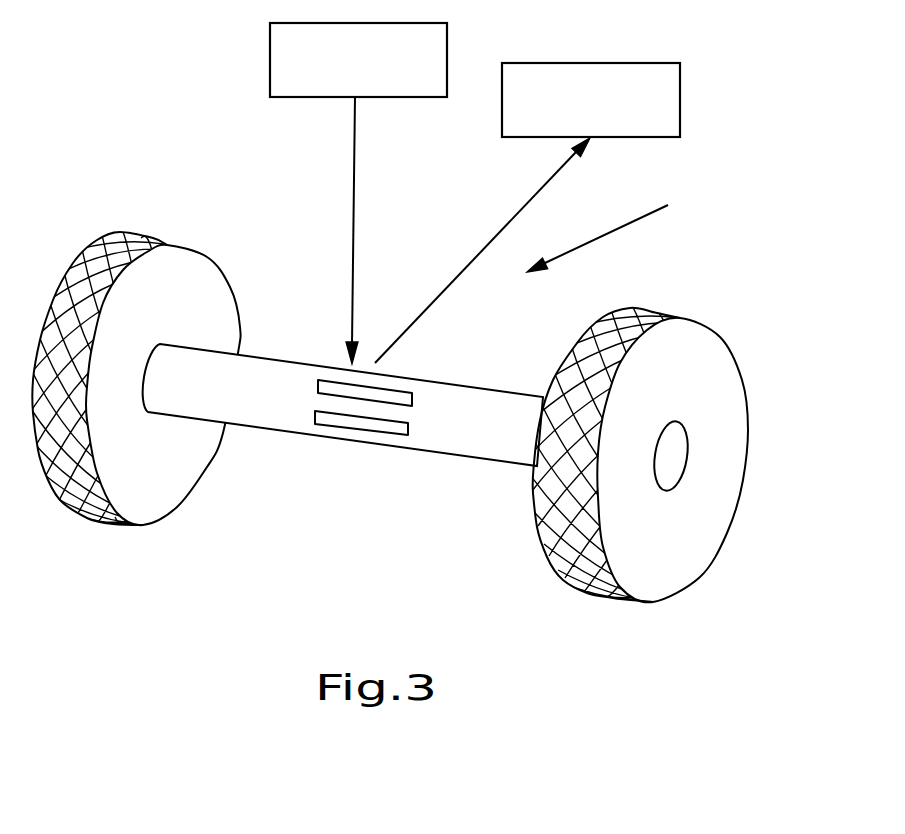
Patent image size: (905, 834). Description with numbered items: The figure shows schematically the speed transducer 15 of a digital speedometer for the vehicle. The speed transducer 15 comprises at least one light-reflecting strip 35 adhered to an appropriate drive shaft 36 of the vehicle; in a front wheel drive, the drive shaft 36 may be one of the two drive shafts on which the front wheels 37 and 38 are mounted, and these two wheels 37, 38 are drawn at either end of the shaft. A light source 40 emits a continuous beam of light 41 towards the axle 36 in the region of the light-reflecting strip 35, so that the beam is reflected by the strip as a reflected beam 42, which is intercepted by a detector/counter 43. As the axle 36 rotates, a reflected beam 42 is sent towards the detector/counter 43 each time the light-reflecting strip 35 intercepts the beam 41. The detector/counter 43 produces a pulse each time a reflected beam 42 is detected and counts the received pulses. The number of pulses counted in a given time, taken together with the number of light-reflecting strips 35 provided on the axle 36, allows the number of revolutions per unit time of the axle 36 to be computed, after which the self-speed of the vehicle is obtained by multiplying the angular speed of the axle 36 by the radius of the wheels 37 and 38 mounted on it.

The speed transducer 15 is at (616, 234).
The light-reflecting strip 35 is at (335, 422).
The drive shaft 36 is at (460, 460).
The front wheel 37 is at (173, 513).
The front wheel 38 is at (663, 598).
The light source 40 is at (270, 71).
The beam of light 41 is at (355, 192).
The reflected beam 42 is at (527, 205).
The detector/counter 43 is at (680, 106).